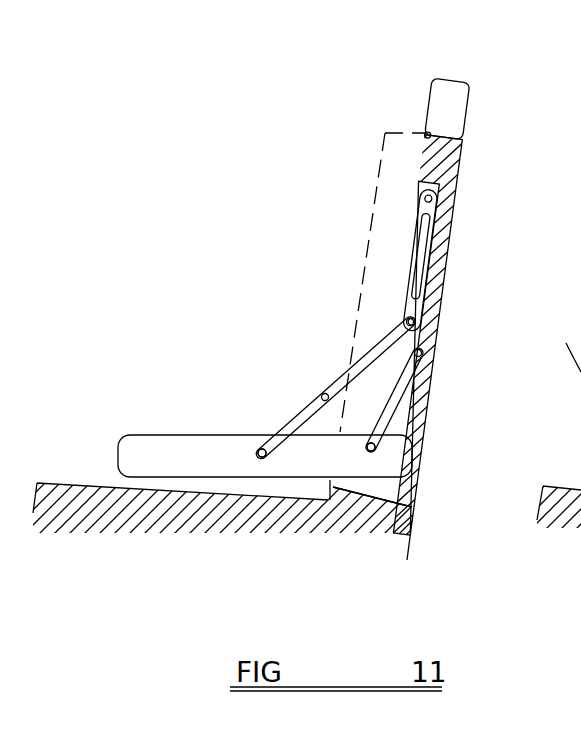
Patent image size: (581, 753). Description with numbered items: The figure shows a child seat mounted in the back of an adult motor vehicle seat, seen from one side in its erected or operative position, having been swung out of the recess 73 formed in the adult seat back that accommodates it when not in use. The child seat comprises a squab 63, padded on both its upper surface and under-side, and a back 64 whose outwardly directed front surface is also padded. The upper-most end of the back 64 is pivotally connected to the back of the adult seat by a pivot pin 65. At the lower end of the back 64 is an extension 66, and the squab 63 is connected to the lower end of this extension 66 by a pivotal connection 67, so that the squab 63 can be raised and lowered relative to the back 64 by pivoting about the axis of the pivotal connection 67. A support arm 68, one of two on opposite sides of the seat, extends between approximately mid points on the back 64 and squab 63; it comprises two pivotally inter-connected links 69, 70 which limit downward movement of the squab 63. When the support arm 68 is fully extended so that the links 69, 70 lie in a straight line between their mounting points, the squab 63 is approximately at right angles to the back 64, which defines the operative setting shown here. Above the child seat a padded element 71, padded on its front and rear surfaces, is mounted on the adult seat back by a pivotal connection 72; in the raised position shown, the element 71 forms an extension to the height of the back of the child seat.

The squab 63 is at (150, 428).
The back 64 is at (413, 204).
The pivot pin 65 is at (447, 198).
The extension 66 is at (412, 432).
The pivotal connection 67 is at (413, 460).
The support arm 68 is at (322, 391).
The link 69 is at (377, 340).
The link 70 is at (288, 423).
The padded element 71 is at (455, 95).
The pivotal connection 72 is at (427, 135).
The recess 73 is at (382, 492).